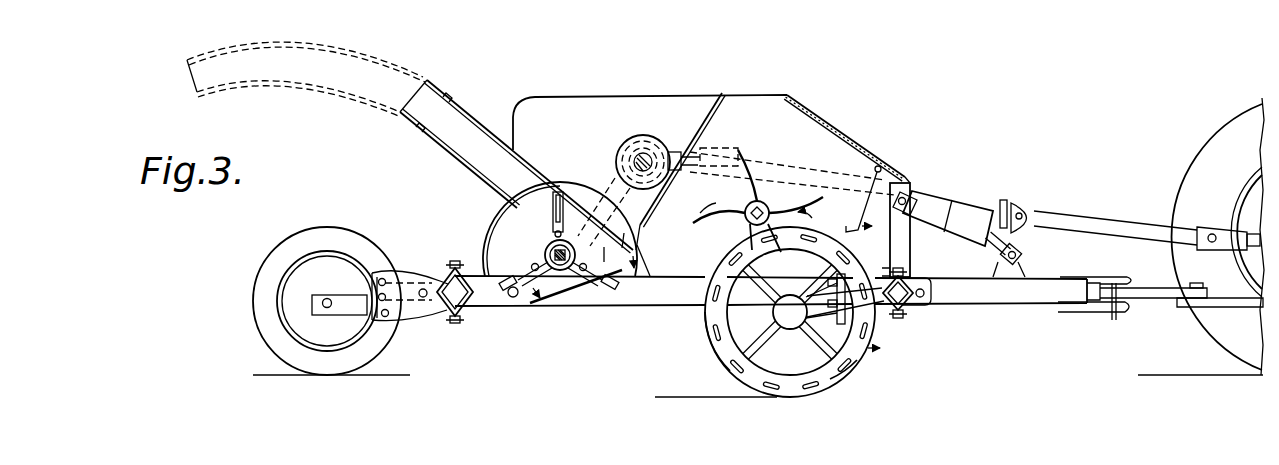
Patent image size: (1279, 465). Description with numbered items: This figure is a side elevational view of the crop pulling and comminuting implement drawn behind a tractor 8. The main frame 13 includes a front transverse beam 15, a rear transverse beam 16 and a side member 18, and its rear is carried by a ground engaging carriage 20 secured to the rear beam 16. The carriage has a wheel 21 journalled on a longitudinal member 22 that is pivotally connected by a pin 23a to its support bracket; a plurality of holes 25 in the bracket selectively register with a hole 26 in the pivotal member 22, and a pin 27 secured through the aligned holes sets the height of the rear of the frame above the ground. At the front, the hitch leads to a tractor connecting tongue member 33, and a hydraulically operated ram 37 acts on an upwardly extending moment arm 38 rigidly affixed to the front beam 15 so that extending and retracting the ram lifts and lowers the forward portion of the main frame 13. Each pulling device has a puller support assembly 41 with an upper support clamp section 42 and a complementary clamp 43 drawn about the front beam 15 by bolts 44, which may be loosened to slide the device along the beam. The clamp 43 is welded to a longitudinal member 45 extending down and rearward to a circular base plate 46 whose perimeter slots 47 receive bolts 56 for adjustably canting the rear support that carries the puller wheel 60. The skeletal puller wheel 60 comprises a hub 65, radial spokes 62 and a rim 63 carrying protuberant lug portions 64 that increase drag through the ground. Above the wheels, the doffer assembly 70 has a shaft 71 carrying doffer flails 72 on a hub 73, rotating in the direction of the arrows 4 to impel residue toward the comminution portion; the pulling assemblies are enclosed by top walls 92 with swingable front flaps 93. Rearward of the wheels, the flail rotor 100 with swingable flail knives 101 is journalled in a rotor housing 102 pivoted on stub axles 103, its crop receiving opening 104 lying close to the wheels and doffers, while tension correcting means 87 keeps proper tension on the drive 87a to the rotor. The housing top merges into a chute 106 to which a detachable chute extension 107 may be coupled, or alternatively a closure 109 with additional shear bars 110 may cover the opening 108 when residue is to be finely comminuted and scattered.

The direction arrow 4 is at (877, 288).
The tractor 8 is at (1213, 162).
The main frame 13 is at (683, 306).
The front transverse beam 15 is at (899, 312).
The rear transverse beam 16 is at (452, 270).
The side member 18 is at (643, 306).
The ground engaging carriage 20 is at (413, 318).
The wheel 21 is at (255, 295).
The longitudinal member 22 is at (340, 295).
The pin 23a is at (427, 298).
The holes 25 is at (382, 293).
The hole 26 is at (387, 295).
The pin 27 is at (367, 312).
The tongue member 33 is at (1085, 310).
The hydraulically operated ram 37 is at (957, 225).
The moment arm 38 is at (913, 187).
The puller support assembly 41 is at (882, 310).
The upper support clamp section 42 is at (933, 295).
The complementary clamp 43 is at (912, 287).
The bolts 44 is at (905, 273).
The longitudinal member 45 is at (883, 270).
The circular base plate 46 is at (845, 370).
The slots 47 is at (820, 323).
The bolts 56 is at (837, 287).
The puller wheel 60 is at (735, 380).
The radial spokes 62 is at (758, 290).
The rim 63 is at (715, 360).
The protuberant lug portions 64 is at (813, 395).
The hub 65 is at (790, 320).
The doffer assembly 70 is at (777, 197).
The shaft 71 is at (770, 211).
The doffer flails 72 is at (750, 148).
The hub 73 is at (763, 240).
The tension correcting means 87 is at (568, 200).
The drive 87a is at (603, 147).
The top walls 92 is at (853, 143).
The swingable front flaps 93 is at (847, 210).
The flail rotor 100 is at (560, 262).
The swingable flail knives 101 is at (517, 277).
The rotor housing 102 is at (487, 233).
The stub axles 103 is at (513, 297).
The crop receiving opening 104 is at (630, 280).
The chute 106 is at (478, 110).
The chute extension 107 is at (337, 90).
The opening 108 is at (544, 200).
The closure 109 is at (537, 187).
The shear bars 110 is at (604, 223).